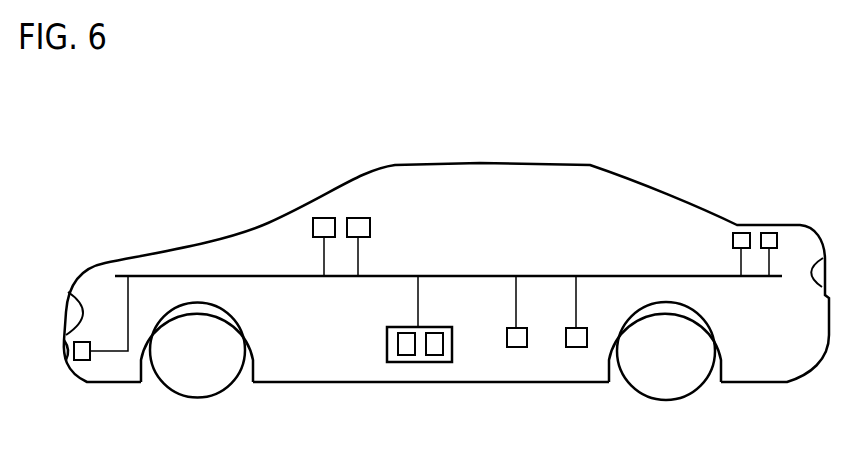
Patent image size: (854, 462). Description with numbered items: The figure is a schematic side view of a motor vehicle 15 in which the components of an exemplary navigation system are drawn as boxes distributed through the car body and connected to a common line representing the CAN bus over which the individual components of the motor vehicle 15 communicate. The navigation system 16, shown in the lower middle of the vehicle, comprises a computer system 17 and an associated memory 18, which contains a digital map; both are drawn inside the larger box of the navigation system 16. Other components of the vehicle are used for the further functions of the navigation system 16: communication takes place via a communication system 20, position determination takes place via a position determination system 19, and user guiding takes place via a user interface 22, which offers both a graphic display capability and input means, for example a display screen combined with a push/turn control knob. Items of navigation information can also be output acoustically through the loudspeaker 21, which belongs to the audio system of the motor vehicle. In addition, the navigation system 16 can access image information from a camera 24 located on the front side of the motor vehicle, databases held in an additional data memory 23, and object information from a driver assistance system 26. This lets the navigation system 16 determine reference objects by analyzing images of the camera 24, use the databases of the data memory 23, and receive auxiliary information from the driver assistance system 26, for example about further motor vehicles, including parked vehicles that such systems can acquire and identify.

The motor vehicle 15 is at (655, 157).
The navigation system 16 is at (387, 340).
The computer system 17 is at (405, 356).
The memory 18 is at (433, 356).
The position determination system 19 is at (742, 233).
The communication system 20 is at (770, 233).
The loudspeaker 21 is at (321, 218).
The user interface 22 is at (357, 218).
The data memory 23 is at (515, 348).
The camera 24 is at (83, 361).
The driver assistance system 26 is at (573, 348).